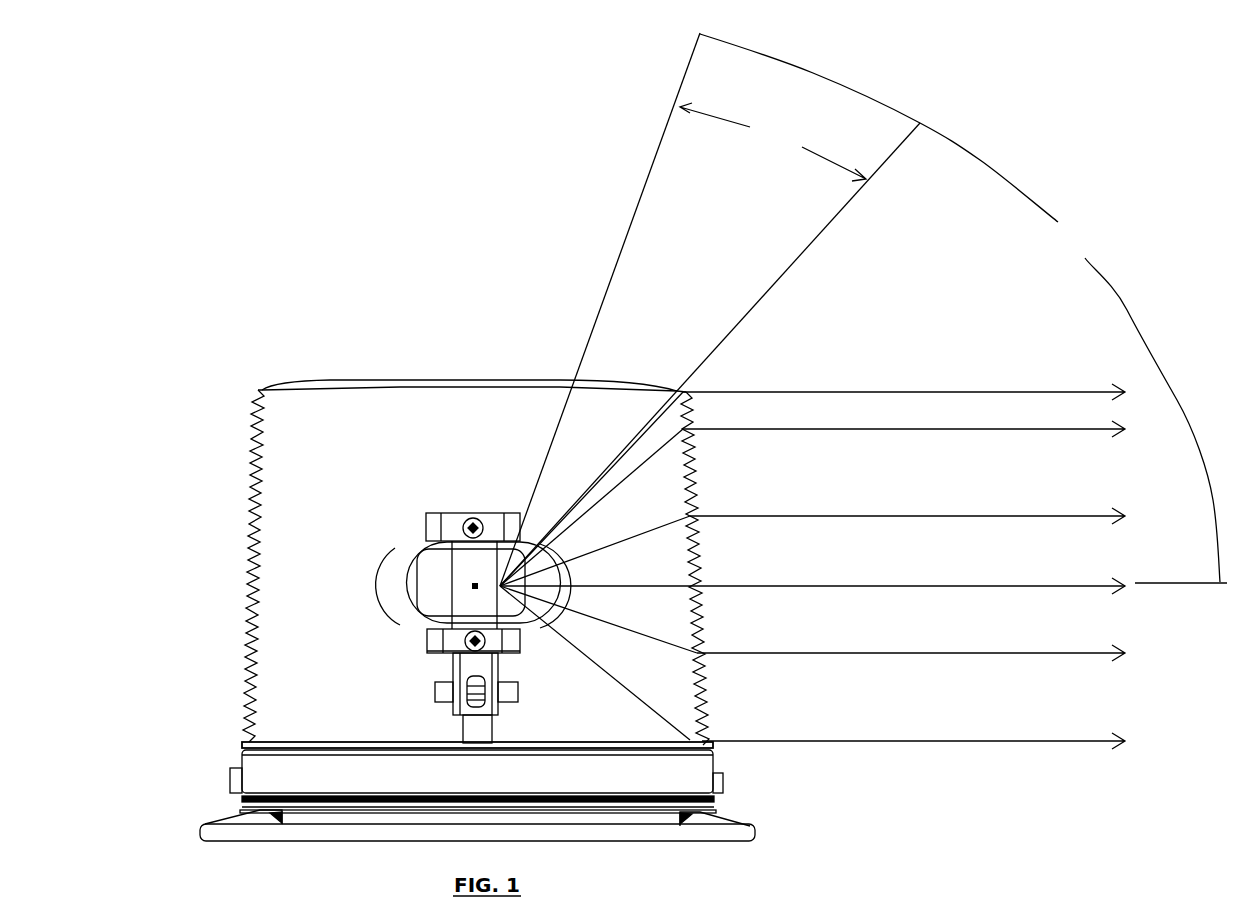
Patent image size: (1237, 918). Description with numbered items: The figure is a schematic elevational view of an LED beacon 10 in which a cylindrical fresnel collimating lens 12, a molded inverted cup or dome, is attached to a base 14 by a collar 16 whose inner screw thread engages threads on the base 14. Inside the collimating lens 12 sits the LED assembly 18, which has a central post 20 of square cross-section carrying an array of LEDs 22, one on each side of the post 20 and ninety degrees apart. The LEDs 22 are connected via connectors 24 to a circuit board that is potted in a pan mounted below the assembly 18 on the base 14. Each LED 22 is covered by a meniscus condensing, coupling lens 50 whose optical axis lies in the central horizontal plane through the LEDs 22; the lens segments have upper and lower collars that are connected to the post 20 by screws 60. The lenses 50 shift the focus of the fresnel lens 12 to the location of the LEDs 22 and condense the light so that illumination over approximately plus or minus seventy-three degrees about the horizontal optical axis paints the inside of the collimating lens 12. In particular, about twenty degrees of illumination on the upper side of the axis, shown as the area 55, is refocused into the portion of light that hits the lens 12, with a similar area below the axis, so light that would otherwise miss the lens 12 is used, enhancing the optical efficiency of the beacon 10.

The LED beacon 10 is at (472, 366).
The cylindrical fresnel collimating lens 12 is at (258, 433).
The base 14 is at (222, 834).
The collar 16 is at (700, 770).
The LED assembly 18 is at (445, 553).
The central post 20 is at (477, 727).
The LEDs 22 is at (410, 558).
The connectors 24 is at (435, 695).
The meniscus condensing coupling lenses 50 is at (380, 593).
The area of illumination 55 is at (666, 290).
The screws 60 is at (443, 513).